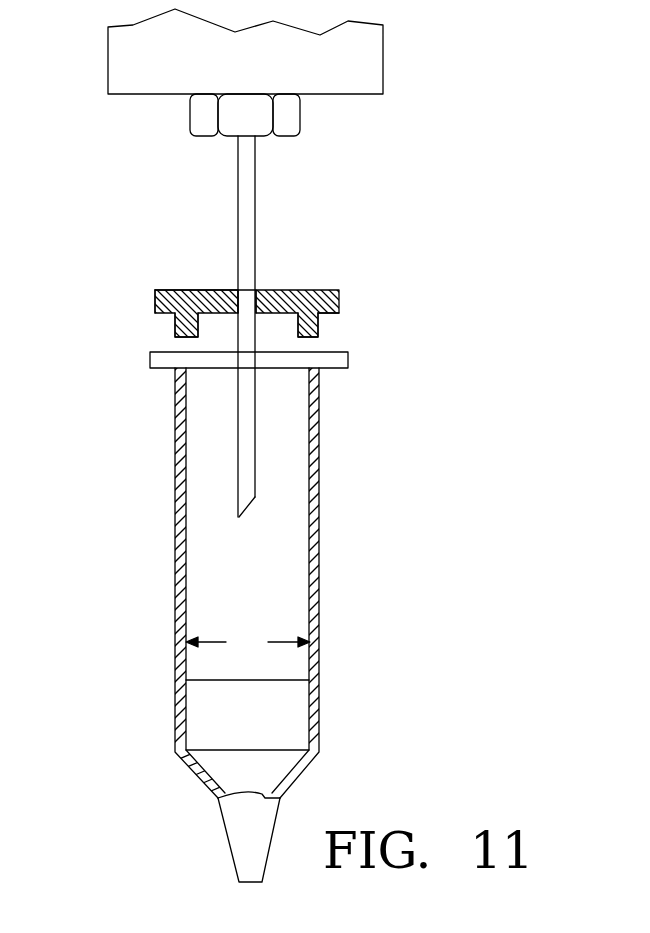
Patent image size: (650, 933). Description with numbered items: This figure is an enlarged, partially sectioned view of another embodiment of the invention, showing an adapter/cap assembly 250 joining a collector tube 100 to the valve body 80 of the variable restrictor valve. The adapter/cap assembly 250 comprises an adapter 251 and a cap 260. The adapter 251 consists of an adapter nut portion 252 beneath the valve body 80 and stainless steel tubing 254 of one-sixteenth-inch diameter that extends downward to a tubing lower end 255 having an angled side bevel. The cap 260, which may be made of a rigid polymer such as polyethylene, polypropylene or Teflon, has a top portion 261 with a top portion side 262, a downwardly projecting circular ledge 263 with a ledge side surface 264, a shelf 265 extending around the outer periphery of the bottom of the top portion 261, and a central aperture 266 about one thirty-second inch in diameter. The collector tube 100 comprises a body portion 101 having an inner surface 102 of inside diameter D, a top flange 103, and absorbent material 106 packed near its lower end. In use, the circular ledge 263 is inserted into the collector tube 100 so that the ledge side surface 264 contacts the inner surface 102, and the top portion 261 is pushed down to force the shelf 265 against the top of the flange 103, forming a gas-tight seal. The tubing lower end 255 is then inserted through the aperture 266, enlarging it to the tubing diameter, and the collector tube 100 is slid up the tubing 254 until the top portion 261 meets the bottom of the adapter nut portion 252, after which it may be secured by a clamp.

The valve body 80 is at (372, 52).
The adapter/cap assembly 250 is at (163, 203).
The adapter 251 is at (166, 138).
The adapter nut portion 252 is at (292, 113).
The stainless steel tubing 254 is at (256, 171).
The tubing lower end 255 is at (245, 509).
The cap 260 is at (195, 282).
The top portion 261 is at (318, 288).
The top portion side 262 is at (152, 300).
The downwardly projecting circular ledge 263 is at (305, 337).
The ledge side surface 264 is at (172, 322).
The shelf 265 is at (328, 320).
The aperture 266 is at (270, 289).
The collector tube 100 is at (144, 594).
The body portion 101 is at (320, 472).
The inner surface 102 is at (178, 482).
The top flange 103 is at (162, 370).
The absorbent material 106 is at (293, 712).